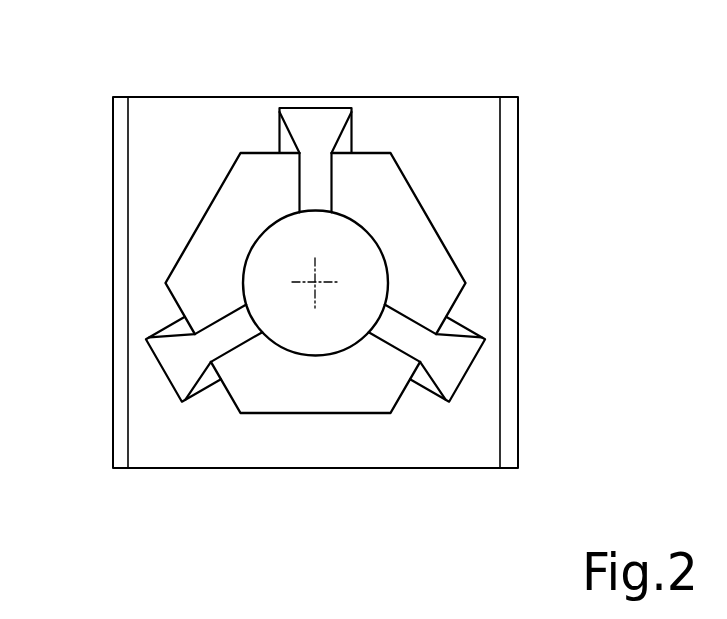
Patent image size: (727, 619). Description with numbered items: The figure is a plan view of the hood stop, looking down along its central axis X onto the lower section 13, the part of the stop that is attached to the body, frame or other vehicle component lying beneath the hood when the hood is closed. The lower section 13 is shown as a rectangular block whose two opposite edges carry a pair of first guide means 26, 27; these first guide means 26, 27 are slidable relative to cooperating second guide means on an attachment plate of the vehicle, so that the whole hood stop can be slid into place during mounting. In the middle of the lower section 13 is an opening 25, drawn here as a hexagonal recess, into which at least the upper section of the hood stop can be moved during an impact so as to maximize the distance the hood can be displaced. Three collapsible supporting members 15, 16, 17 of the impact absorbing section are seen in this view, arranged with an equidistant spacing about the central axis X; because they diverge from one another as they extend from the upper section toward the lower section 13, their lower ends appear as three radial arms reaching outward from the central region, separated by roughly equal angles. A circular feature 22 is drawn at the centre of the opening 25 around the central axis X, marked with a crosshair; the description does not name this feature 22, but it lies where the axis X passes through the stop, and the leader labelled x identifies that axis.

The lower section 13 is at (412, 107).
The collapsible supporting member 15 is at (318, 118).
The collapsible supporting member 16 is at (463, 352).
The collapsible supporting member 17 is at (182, 354).
The central bore 22 is at (263, 258).
The opening 25 is at (437, 253).
The first guide means 26 is at (512, 427).
The first guide means 27 is at (118, 438).
The central axis x is at (315, 280).